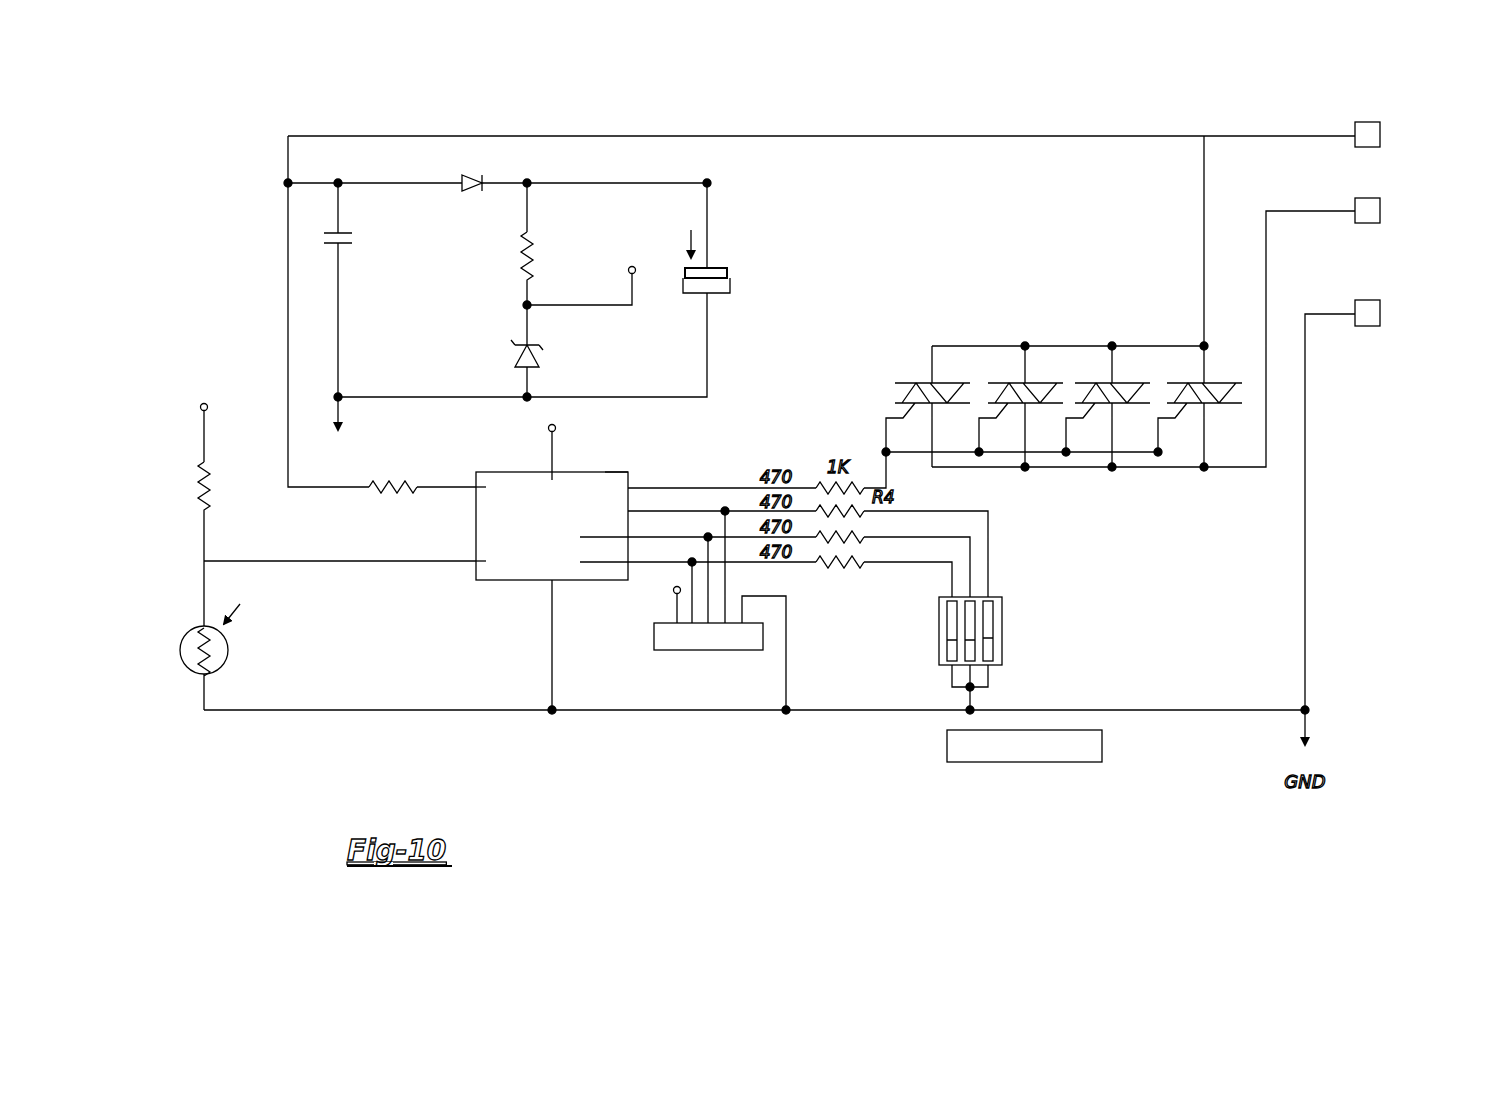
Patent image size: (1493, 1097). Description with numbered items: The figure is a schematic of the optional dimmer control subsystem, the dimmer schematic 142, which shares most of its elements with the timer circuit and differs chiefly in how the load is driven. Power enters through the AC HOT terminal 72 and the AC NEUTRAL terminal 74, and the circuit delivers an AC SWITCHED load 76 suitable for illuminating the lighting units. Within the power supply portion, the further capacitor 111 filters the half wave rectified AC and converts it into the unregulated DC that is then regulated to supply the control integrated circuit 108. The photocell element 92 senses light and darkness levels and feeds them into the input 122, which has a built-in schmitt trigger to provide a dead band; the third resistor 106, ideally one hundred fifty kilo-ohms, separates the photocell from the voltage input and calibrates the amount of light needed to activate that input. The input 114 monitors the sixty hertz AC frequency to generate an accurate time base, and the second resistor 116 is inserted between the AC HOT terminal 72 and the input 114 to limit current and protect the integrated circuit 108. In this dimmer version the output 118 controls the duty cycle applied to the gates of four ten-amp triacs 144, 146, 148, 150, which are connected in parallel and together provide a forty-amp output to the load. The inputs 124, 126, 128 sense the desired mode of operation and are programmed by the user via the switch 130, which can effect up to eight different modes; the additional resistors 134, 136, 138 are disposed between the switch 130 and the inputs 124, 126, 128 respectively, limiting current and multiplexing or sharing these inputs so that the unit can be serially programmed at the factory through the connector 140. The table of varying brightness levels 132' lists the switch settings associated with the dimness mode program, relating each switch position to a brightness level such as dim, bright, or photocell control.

The dimmer schematic 142 is at (478, 104).
The further capacitor 111 is at (718, 266).
The control integrated circuit 108 is at (470, 610).
The input 114 is at (480, 470).
The input 128 is at (552, 497).
The output terminal 118 is at (605, 472).
The input 126 is at (580, 537).
The input 122 is at (476, 567).
The input 124 is at (580, 562).
The second resistor 116 is at (385, 458).
The additional resistor 138 is at (898, 527).
The additional resistor 136 is at (898, 553).
The additional resistor 134 is at (877, 593).
The switch 130 is at (920, 646).
The connector 140 is at (628, 656).
The third resistor 106 is at (200, 488).
The photocell element 92 is at (192, 630).
The triac 144 is at (895, 383).
The triac 146 is at (1013, 383).
The triac 148 is at (1098, 383).
The triac 150 is at (1190, 383).
The AC HOT terminal 72 is at (1380, 133).
The AC SWITCHED load 76 is at (1380, 210).
The AC NEUTRAL terminal 74 is at (1380, 313).
The table of varying brightness levels 132' is at (944, 819).